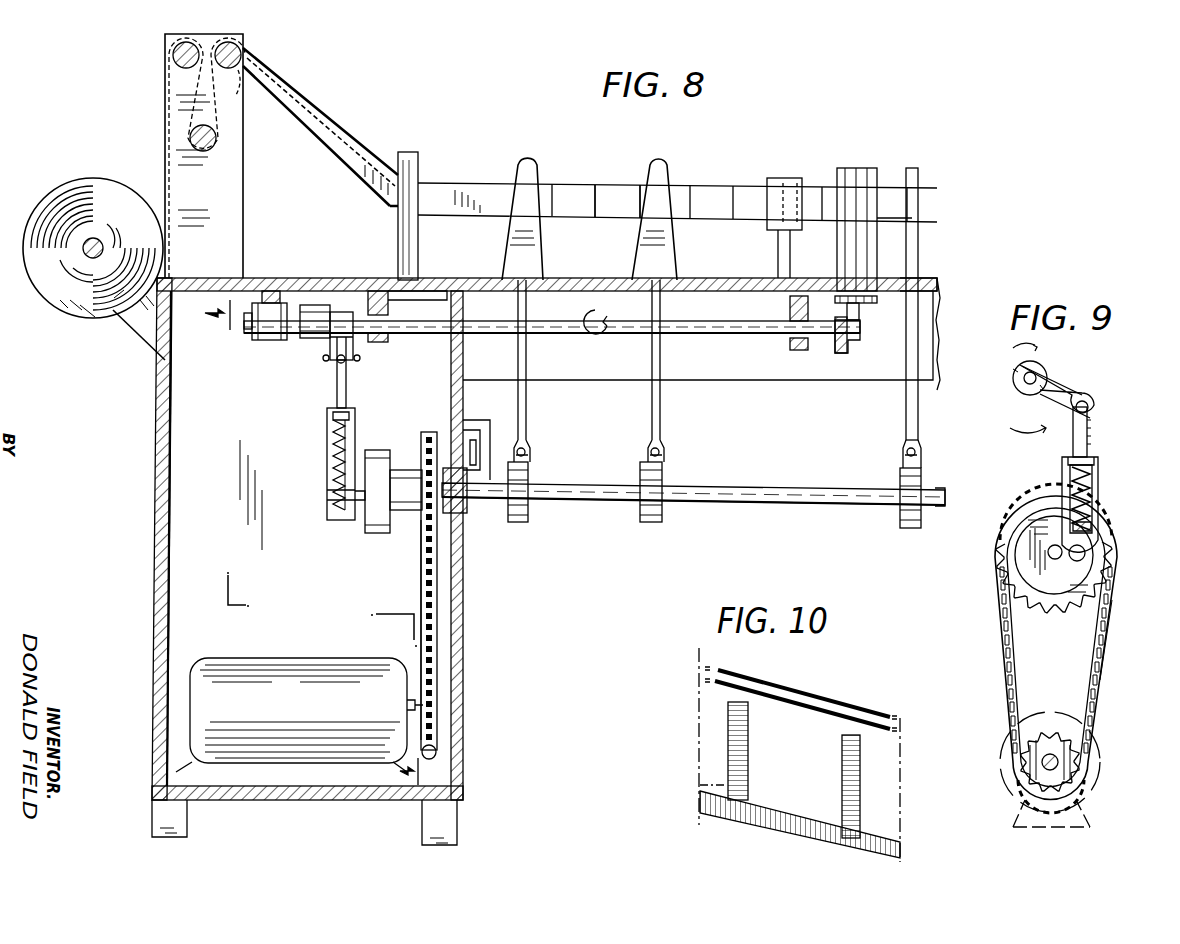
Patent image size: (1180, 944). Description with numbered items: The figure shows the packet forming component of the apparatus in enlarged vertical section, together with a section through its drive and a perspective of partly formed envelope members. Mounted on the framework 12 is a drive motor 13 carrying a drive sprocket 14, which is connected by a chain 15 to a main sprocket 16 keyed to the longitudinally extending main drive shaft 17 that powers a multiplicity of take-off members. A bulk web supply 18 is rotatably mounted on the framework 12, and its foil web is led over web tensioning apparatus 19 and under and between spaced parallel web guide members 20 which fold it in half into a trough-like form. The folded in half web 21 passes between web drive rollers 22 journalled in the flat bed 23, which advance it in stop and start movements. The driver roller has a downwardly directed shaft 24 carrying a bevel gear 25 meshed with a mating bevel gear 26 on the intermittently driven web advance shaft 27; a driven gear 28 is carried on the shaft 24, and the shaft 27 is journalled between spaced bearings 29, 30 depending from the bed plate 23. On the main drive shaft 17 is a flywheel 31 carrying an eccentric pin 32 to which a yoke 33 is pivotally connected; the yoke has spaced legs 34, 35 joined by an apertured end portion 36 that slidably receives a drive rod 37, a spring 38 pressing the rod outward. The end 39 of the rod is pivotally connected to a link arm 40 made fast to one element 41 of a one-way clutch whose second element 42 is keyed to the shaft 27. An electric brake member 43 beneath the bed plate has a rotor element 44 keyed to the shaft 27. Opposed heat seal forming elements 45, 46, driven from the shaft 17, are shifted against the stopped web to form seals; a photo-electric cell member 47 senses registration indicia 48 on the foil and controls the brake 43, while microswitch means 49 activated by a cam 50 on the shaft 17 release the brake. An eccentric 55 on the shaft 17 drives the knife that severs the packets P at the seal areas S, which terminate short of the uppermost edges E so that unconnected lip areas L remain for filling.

In FIG. 8, the framework 12 is at (452, 636).
In FIG. 8, the drive motor 13 is at (437, 752).
In FIG. 9, the drive motor 13 is at (1100, 770).
In FIG. 8, the drive sprocket 14 is at (430, 705).
In FIG. 9, the drive sprocket 14 is at (1037, 752).
In FIG. 8, the chain 15 is at (437, 580).
In FIG. 9, the chain 15 is at (1110, 628).
In FIG. 8, the main sprocket 16 is at (430, 432).
In FIG. 9, the main sprocket 16 is at (1115, 552).
In FIG. 8, the main drive shaft 17 is at (712, 503).
In FIG. 9, the main drive shaft 17 is at (1048, 552).
In FIG. 8, the bulk web supply 18 is at (84, 300).
In FIG. 8, the web tensioning apparatus 19 is at (243, 100).
In FIG. 8, the web guide members 20 is at (410, 157).
In FIG. 8, the folded in half web 21 is at (464, 183).
In FIG. 8, the web drive roller 22 is at (872, 168).
In FIG. 8, the flat bed 23 is at (937, 285).
In FIG. 8, the shaft 24 is at (859, 312).
In FIG. 8, the bevel gear 25 is at (852, 340).
In FIG. 8, the mating bevel gear 26 is at (841, 353).
In FIG. 8, the web advance shaft 27 is at (695, 333).
In FIG. 9, the web advance shaft 27 is at (1013, 378).
In FIG. 8, the driven gear 28 is at (877, 300).
In FIG. 8, the bearing 29 is at (808, 350).
In FIG. 8, the bearing 30 is at (390, 340).
In FIG. 8, the flywheel 31 is at (380, 533).
In FIG. 9, the flywheel 31 is at (1028, 522).
In FIG. 8, the eccentric pin 32 is at (327, 492).
In FIG. 9, the eccentric pin 32 is at (1085, 553).
In FIG. 8, the yoke 33 is at (380, 433).
In FIG. 9, the yoke 33 is at (1118, 437).
In FIG. 9, the yoke leg 34 is at (1062, 470).
In FIG. 8, the yoke leg 35 is at (327, 425).
In FIG. 9, the yoke leg 35 is at (1098, 480).
In FIG. 8, the end portion 36 is at (327, 410).
In FIG. 9, the end portion 36 is at (1062, 460).
In FIG. 8, the drive rod 37 is at (346, 395).
In FIG. 9, the drive rod 37 is at (1090, 428).
In FIG. 8, the spring 38 is at (327, 455).
In FIG. 9, the spring 38 is at (1070, 482).
In FIG. 8, the end of the rod 39 is at (345, 362).
In FIG. 9, the end of the rod 39 is at (1090, 405).
In FIG. 8, the link arm 40 is at (353, 345).
In FIG. 9, the link arm 40 is at (1068, 385).
In FIG. 8, the one-way clutch element 41 is at (352, 291).
In FIG. 8, the one-way clutch element 42 is at (306, 340).
In FIG. 8, the electric brake member 43 is at (282, 342).
In FIG. 8, the rotor element 44 is at (248, 338).
In FIG. 8, the heat seal forming element 45 is at (527, 163).
In FIG. 8, the heat seal forming element 46 is at (660, 163).
In FIG. 8, the photo-electric cell member 47 is at (790, 175).
In FIG. 8, the registration indicia 48 is at (690, 186).
In FIG. 8, the microswitch means 49 is at (487, 420).
In FIG. 8, the cam 50 is at (455, 513).
In FIG. 8, the eccentric 55 is at (900, 478).
In FIG. 10, the uppermost edges E is at (758, 680).
In FIG. 10, the lip areas L is at (795, 712).
In FIG. 10, the seal areas S is at (875, 828).
In FIG. 10, the packets P is at (886, 768).